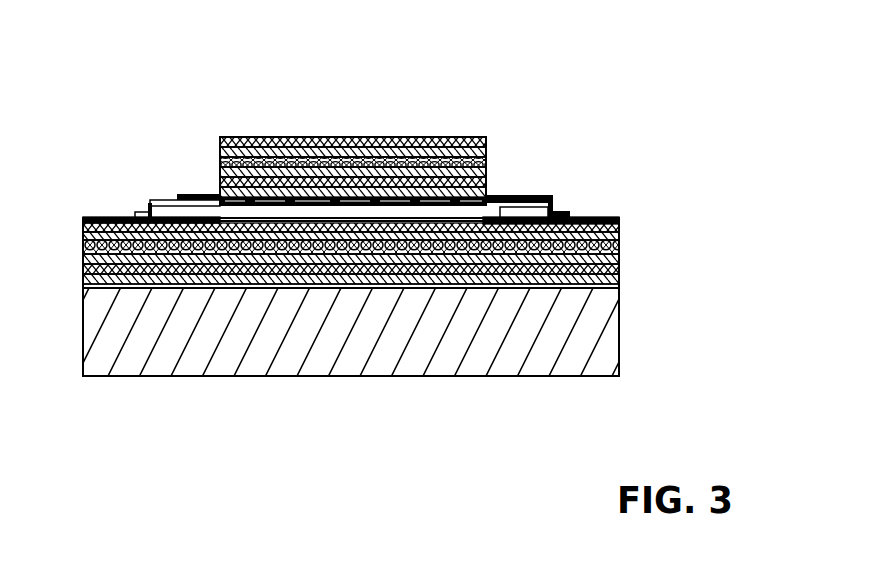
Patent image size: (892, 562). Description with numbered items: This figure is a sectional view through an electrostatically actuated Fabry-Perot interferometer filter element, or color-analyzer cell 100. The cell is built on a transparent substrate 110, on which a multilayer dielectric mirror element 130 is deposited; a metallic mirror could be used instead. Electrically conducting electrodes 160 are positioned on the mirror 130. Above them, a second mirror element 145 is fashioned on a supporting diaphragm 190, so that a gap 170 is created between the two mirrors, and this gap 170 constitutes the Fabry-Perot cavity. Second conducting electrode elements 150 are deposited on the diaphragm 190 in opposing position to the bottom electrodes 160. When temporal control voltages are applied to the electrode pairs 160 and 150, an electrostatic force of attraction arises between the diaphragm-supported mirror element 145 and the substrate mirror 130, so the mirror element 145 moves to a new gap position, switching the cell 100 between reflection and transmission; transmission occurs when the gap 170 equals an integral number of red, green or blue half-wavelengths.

The color-analyzer cell 100 is at (113, 463).
The transparent substrate 110 is at (555, 368).
The multilayer dielectric mirror element 130 is at (622, 263).
The second mirror element 145 is at (266, 137).
The second conducting electrode elements 150 is at (542, 197).
The electrically conducting electrodes 160 is at (520, 197).
The gap 170 is at (300, 213).
The supporting diaphragm 190 is at (157, 192).